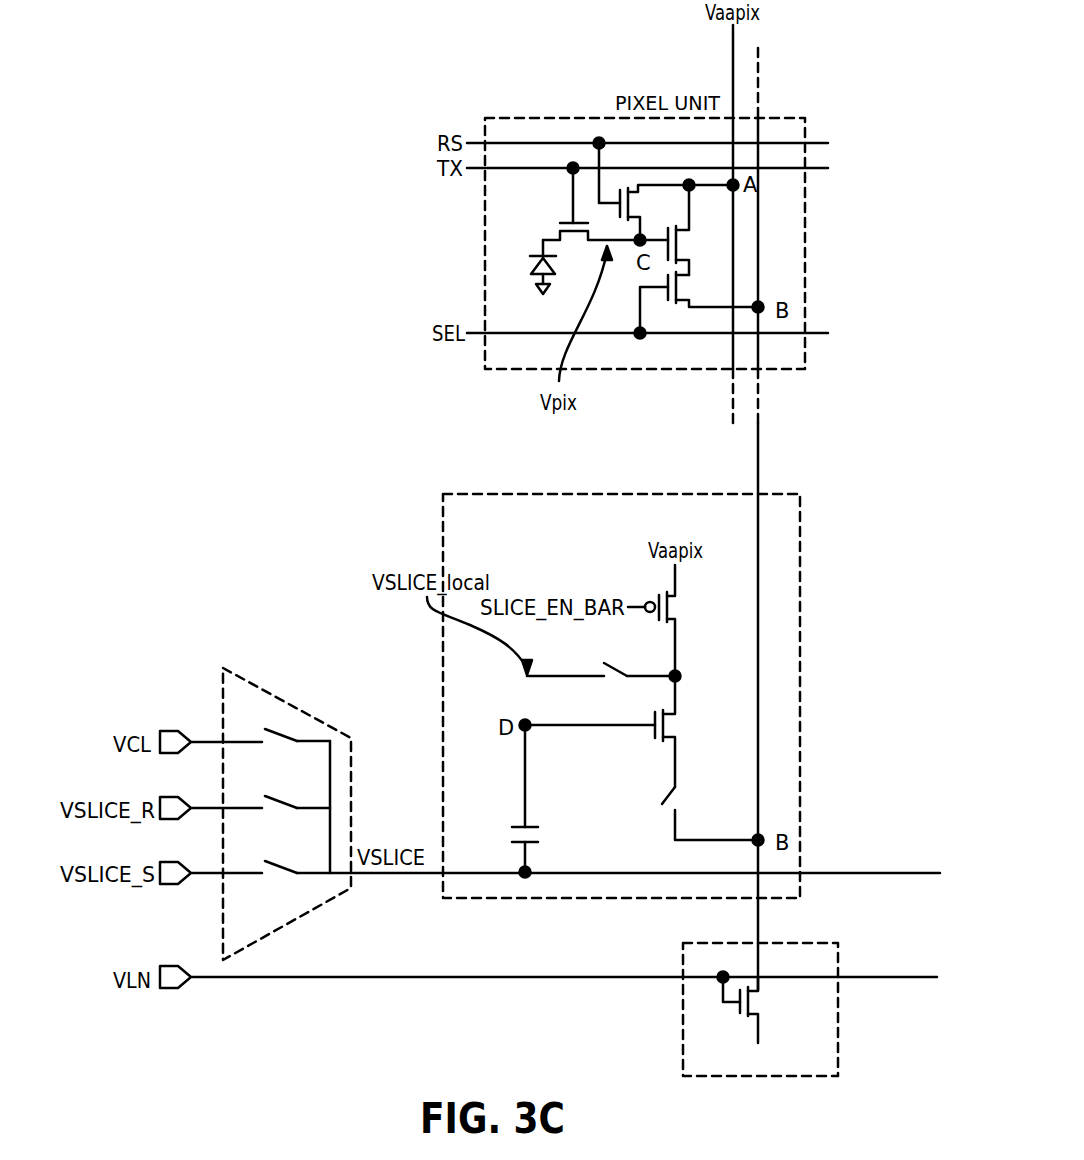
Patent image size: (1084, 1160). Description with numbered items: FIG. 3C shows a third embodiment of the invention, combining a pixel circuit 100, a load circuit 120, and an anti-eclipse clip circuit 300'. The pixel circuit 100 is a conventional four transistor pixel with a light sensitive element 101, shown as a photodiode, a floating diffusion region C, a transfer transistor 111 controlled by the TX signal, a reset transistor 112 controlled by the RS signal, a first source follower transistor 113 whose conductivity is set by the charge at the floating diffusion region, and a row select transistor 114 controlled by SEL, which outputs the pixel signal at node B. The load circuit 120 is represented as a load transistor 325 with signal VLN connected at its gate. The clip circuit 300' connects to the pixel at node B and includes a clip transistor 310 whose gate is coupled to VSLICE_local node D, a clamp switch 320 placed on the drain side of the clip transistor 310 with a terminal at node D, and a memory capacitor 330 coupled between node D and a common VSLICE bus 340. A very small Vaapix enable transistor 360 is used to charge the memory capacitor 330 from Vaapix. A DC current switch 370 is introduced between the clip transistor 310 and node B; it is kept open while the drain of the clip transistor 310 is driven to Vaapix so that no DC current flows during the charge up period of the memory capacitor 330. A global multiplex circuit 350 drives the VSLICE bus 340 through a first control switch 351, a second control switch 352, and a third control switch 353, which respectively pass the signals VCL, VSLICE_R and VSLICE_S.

The pixel circuit 100 is at (485, 215).
The light sensitive element 101 is at (530, 266).
The transfer transistor 111 is at (553, 233).
The reset transistor 112 is at (636, 206).
The first source follower transistor 113 is at (683, 241).
The row select transistor 114 is at (683, 296).
The load circuit 120 is at (683, 1043).
The clip circuit 300' is at (664, 696).
The clip transistor 310 is at (670, 722).
The clamp switch 320 is at (617, 666).
The load transistor 325 is at (752, 1000).
The memory capacitor 330 is at (540, 838).
The VSLICE bus 340 is at (458, 870).
The global multiplex circuit 350 is at (308, 716).
The first control switch 351 is at (282, 737).
The second control switch 352 is at (284, 799).
The third control switch 353 is at (284, 862).
The Vaapix enable transistor 360 is at (670, 606).
The DC current switch 370 is at (677, 803).